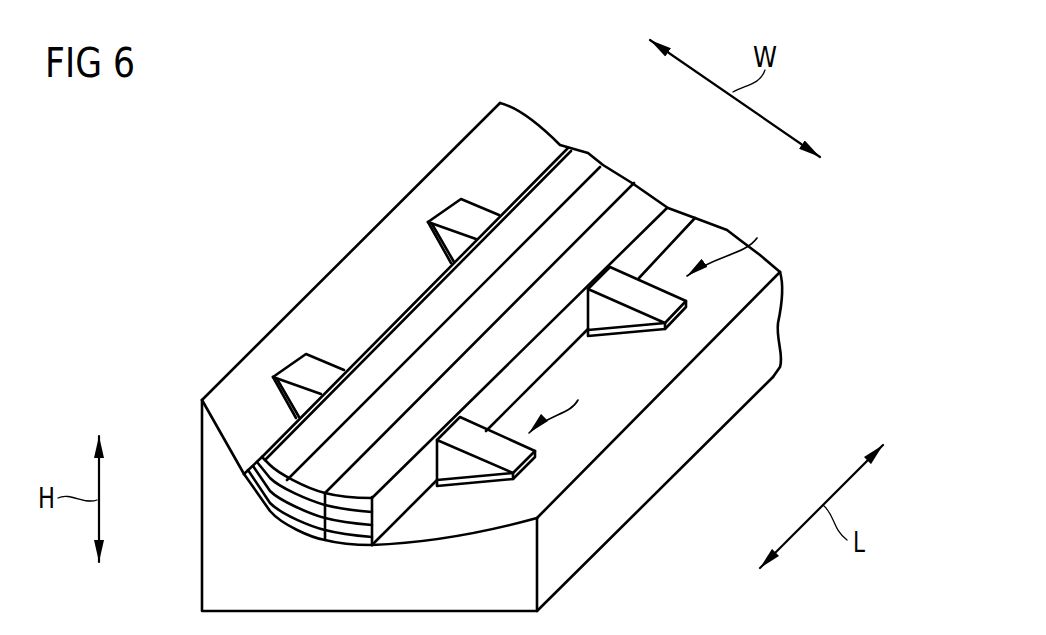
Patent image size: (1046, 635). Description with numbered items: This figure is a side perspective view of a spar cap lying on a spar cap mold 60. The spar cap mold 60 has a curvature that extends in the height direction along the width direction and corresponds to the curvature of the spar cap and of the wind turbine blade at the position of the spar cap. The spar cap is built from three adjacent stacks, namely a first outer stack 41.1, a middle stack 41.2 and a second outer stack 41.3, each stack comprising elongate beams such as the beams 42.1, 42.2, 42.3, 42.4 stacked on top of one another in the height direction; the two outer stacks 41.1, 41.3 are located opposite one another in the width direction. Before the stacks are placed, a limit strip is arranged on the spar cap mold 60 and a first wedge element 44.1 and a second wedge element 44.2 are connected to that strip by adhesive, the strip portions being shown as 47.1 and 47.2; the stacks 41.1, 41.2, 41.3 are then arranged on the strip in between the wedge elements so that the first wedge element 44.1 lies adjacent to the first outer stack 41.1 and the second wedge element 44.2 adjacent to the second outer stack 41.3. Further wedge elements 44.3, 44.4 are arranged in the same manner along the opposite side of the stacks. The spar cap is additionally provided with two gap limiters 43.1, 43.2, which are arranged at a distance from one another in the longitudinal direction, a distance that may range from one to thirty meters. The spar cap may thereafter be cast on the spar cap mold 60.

The first outer stack 41.1 is at (580, 160).
The middle stack 41.2 is at (615, 182).
The second outer stack 41.3 is at (648, 203).
The beam 42.1 is at (277, 468).
The beam 42.2 is at (271, 481).
The beam 42.3 is at (262, 497).
The beam 42.4 is at (275, 508).
The gap limiter 43.1 is at (567, 400).
The gap limiter 43.2 is at (738, 240).
The first wedge element 44.1 is at (300, 365).
The second wedge element 44.2 is at (533, 457).
The first wedge element 44.3 is at (453, 213).
The second wedge element 44.4 is at (683, 305).
The first shim plate 47.1 is at (470, 486).
The second shim plate 47.2 is at (668, 322).
The spar cap mold 60 is at (677, 460).